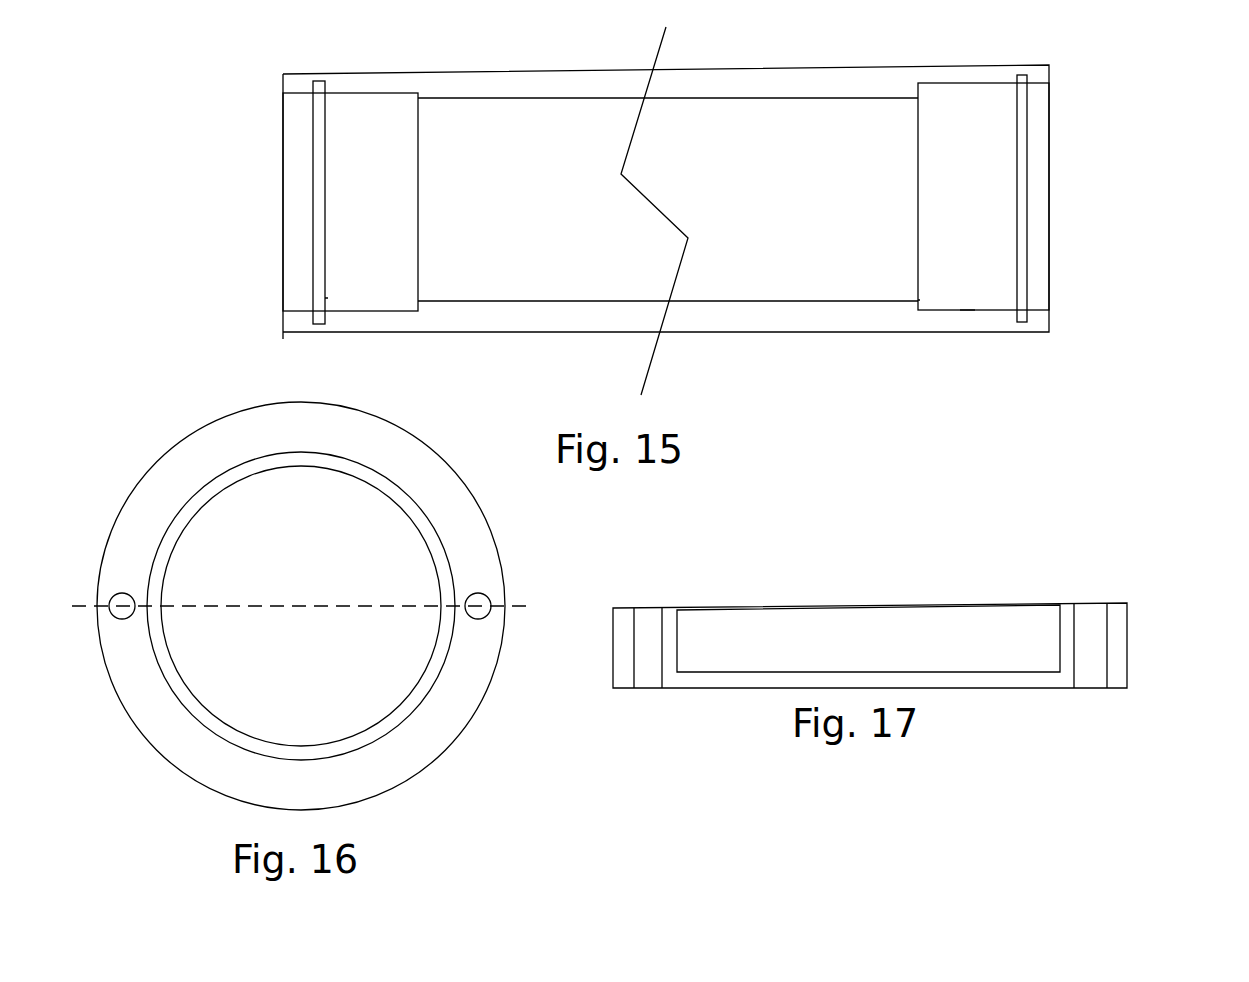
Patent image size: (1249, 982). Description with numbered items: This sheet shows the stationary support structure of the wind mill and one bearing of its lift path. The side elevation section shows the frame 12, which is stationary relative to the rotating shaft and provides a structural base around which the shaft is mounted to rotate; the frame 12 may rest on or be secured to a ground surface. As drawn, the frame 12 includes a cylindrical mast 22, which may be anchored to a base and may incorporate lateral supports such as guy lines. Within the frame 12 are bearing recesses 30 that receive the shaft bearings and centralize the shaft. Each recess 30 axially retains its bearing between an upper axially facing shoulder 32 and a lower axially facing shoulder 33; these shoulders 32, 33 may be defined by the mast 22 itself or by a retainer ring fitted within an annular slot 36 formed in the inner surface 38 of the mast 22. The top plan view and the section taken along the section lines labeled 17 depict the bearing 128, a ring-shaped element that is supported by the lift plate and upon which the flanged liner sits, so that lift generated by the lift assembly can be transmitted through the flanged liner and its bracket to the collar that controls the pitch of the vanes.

In FIG. 15, the frame 12 is at (666, 247).
In FIG. 15, the mast 22 is at (777, 333).
In FIG. 15, the bearing recess 30 is at (347, 199).
In FIG. 15, the upper axially facing shoulder 32 is at (418, 300).
In FIG. 15, the lower axially facing shoulder 33 is at (328, 298).
In FIG. 15, the annular slot 36 is at (318, 324).
In FIG. 15, the inner surface 38 is at (966, 310).
In FIG. 16, the bearing 128 is at (462, 690).
In FIG. 17, the bearing 128 is at (1120, 647).
In FIG. 16, the section line 17- 17 is at (534, 563).